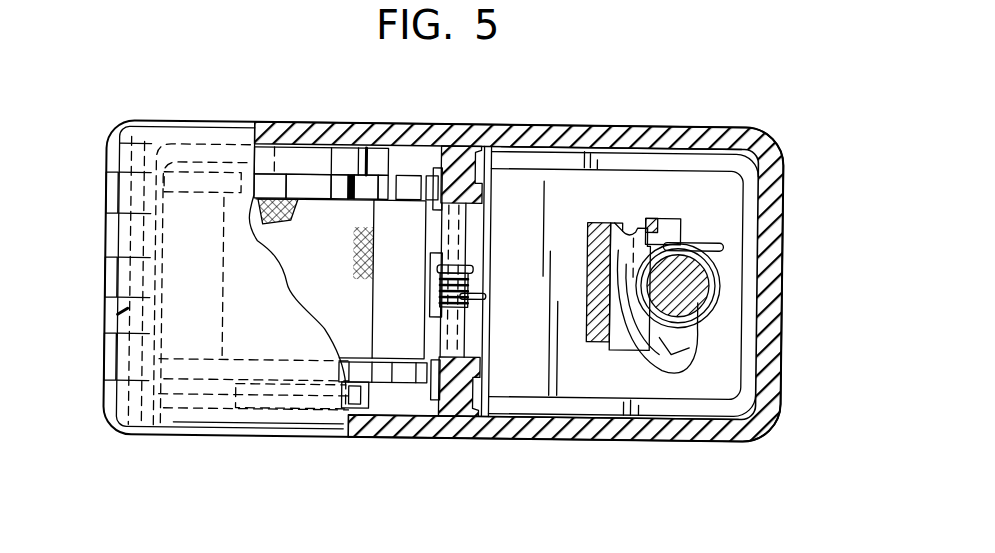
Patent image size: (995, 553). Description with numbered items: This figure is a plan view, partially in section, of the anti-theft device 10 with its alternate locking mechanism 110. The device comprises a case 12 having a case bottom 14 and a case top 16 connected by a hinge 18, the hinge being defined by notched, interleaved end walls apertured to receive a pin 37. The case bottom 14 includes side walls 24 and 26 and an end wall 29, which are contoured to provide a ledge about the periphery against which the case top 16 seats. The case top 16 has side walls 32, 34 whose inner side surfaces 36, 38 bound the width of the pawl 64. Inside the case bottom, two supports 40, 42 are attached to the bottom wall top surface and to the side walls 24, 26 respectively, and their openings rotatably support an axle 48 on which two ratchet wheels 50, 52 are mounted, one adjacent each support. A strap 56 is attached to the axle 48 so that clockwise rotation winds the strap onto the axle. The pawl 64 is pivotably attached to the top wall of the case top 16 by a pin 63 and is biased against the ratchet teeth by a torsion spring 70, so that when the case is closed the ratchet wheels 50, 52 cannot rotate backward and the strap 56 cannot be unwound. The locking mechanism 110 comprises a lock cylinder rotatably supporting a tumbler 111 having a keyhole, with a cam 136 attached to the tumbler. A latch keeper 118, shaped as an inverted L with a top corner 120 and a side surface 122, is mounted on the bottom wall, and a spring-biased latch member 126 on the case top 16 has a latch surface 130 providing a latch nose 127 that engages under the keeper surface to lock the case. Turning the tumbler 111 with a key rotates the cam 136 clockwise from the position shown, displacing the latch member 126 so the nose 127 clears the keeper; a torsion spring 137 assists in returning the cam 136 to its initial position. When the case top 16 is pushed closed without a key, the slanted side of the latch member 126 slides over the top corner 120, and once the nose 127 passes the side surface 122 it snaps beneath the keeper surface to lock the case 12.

The anti-theft device 10 is at (243, 75).
The case 12 is at (200, 118).
The case bottom 14 is at (727, 198).
The case top 16 is at (549, 127).
The hinge 18 is at (105, 282).
The side wall 24 is at (600, 407).
The side wall 26 is at (657, 160).
The end wall 29 is at (752, 259).
The side wall 32 is at (278, 437).
The side wall 34 is at (277, 124).
The inner side surface 36 is at (421, 408).
The pin 37 is at (128, 313).
The inner side surface 38 is at (440, 128).
The support 40 is at (353, 412).
The support 42 is at (352, 128).
The axle 48 is at (310, 128).
The ratchet wheel 50 is at (393, 390).
The ratchet wheel 52 is at (398, 128).
The strap 56 is at (363, 332).
The pin 63 is at (463, 332).
The pawl 64 is at (428, 263).
The torsion spring 70 is at (467, 297).
The locking mechanism 110 is at (663, 200).
The tumbler 111 is at (697, 292).
The latch keeper 118 is at (682, 232).
The top corner 120 is at (587, 249).
The side surface 122 is at (607, 342).
The latch member 126 is at (587, 227).
The latch nose 127 is at (617, 227).
The latch surface 130 is at (628, 223).
The cam 136 is at (683, 368).
The torsion spring 137 is at (713, 317).